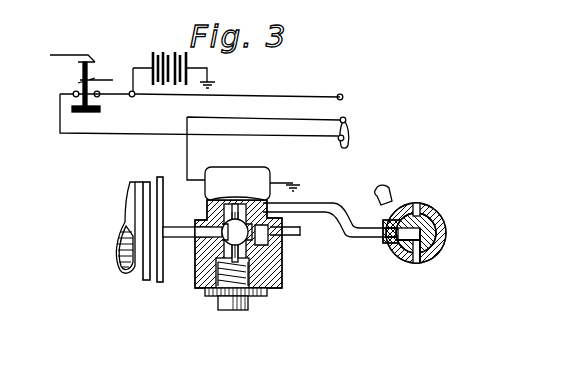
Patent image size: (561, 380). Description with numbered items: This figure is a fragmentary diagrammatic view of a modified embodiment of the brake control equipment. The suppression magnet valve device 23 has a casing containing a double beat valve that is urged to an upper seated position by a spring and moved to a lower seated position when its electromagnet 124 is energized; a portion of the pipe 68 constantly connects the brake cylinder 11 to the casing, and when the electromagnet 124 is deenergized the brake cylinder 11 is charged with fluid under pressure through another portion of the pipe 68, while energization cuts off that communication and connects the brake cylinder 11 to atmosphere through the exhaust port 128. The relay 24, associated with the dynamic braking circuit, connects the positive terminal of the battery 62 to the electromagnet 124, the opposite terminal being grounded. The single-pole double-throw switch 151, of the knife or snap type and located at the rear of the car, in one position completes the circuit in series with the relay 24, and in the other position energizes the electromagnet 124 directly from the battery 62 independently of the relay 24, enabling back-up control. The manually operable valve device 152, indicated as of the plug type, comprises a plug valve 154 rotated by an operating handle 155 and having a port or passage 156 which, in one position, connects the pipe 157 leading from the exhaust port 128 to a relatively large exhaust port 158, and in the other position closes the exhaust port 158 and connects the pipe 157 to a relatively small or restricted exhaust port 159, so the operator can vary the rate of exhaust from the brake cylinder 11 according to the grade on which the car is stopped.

The relay 24 is at (74, 72).
The battery 62 is at (150, 57).
The brake cylinder 11 is at (143, 172).
The electromagnet 124 is at (228, 158).
The suppression magnet valve device 23 is at (241, 165).
The exhaust port 128 is at (237, 190).
The pipe 68 is at (297, 238).
The single-pole double-throw switch 151 is at (351, 132).
The manually operable valve device 152 is at (410, 203).
The restricted exhaust port 159 is at (423, 203).
The plug valve 154 is at (477, 172).
The port or passage 156 is at (441, 246).
The operating handle 155 is at (372, 193).
The pipe 157 is at (365, 231).
The large exhaust port 158 is at (415, 263).